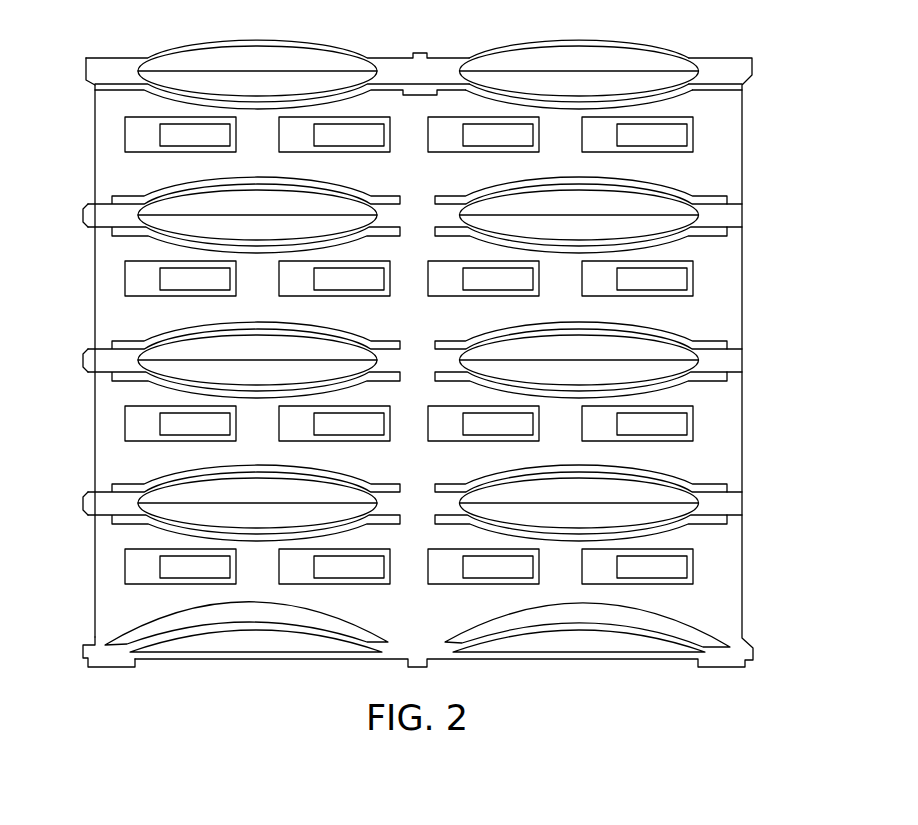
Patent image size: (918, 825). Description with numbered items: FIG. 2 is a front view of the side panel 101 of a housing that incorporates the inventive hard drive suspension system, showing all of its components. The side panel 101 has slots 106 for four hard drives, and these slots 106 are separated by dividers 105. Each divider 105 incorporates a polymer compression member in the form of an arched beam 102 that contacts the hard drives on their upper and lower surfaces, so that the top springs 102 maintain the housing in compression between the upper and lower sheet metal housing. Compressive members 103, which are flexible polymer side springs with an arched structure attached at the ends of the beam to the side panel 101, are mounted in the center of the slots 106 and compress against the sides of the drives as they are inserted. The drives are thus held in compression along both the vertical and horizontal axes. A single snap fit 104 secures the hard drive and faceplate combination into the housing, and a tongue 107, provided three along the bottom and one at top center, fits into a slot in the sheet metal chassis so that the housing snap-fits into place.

The side panel 101 is at (396, 176).
The arched beam 102 is at (678, 97).
The compressive member 103 is at (690, 133).
The snap fit 104 is at (615, 231).
The divider 105 is at (772, 491).
The slot 106 is at (105, 437).
The tongue 107 is at (88, 644).